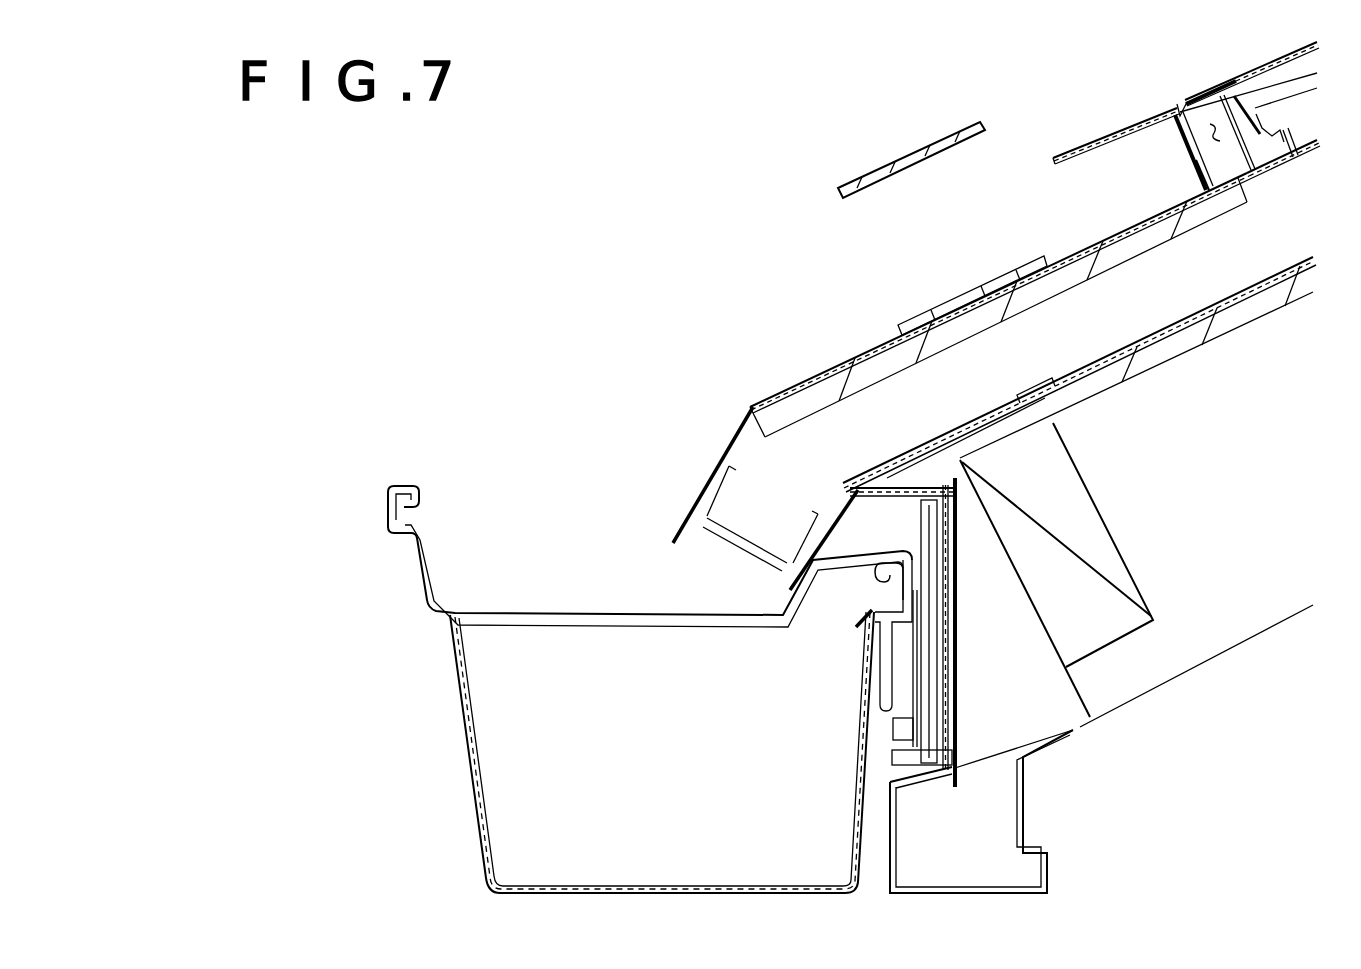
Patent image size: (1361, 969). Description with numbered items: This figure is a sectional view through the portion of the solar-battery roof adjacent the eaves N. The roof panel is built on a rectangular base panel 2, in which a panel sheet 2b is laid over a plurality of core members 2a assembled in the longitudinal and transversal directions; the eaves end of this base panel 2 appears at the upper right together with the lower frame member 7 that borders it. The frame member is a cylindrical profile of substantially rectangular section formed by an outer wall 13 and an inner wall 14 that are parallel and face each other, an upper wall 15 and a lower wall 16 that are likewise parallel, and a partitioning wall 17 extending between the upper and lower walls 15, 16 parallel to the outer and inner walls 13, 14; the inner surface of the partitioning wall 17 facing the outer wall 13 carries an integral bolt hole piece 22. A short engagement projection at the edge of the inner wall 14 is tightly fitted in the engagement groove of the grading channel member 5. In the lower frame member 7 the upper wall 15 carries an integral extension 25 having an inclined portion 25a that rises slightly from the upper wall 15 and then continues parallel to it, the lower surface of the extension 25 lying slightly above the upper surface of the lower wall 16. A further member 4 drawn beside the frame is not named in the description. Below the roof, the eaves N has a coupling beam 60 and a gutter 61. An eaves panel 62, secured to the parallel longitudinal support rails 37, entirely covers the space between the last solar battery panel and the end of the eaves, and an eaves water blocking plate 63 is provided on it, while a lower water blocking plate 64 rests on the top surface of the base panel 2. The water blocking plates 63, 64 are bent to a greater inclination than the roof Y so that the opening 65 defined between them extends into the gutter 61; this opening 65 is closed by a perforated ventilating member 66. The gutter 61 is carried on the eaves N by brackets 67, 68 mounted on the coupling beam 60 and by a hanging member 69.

The base panel 2 is at (1154, 398).
The core members 2a is at (1100, 490).
The panel sheet 2b is at (1197, 338).
The rafter 4 is at (1292, 82).
The grading channel member 5 is at (1270, 128).
The lower frame member 7 is at (1174, 98).
The outer wall 13 is at (1195, 152).
The inner wall 14 is at (1290, 150).
The upper wall 15 is at (1222, 98).
The lower wall 16 is at (1258, 174).
The partitioning wall 17 is at (1200, 162).
The bolt hole piece 22 is at (1182, 135).
The extension 25 is at (1090, 150).
The inclined portion 25a is at (1170, 111).
The support rails 37 is at (1247, 273).
The coupling beam 60 is at (1078, 698).
The gutter 61 is at (446, 742).
The eaves panel 62 is at (1157, 237).
The eaves water blocking plate 63 is at (877, 352).
The water blocking plate 64 is at (873, 599).
The opening 65 is at (703, 533).
The perforated ventilating member 66 is at (758, 548).
The bracket 67 is at (1027, 750).
The bracket 68 is at (1090, 717).
The hanging member 69 is at (592, 614).